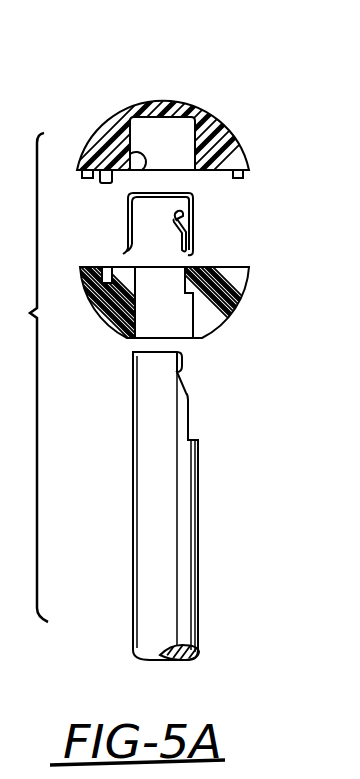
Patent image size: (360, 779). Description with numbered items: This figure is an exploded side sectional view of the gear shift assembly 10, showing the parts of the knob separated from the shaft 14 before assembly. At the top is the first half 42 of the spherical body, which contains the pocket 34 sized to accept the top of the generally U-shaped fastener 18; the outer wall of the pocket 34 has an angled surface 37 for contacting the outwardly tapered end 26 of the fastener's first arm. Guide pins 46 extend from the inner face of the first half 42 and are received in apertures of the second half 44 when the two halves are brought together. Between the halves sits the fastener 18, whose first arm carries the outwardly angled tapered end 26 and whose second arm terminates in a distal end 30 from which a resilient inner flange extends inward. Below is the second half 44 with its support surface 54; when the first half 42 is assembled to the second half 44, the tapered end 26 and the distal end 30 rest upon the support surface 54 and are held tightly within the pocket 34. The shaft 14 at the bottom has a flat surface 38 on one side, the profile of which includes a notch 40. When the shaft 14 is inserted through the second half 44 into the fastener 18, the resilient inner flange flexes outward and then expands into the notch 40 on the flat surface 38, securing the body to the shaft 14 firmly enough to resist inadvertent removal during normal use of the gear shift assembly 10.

The gear shift assembly 10 is at (27, 377).
The shaft 14 is at (188, 543).
The fastener 18 is at (195, 229).
The tapered end 26 is at (124, 252).
The distal end 30 is at (192, 255).
The pocket 34 is at (177, 127).
The angled surface 37 is at (138, 168).
The flat surface 38 is at (188, 418).
The notch 40 is at (180, 373).
The first half 42 is at (232, 123).
The second half 44 is at (243, 282).
The guide pins 46 is at (82, 182).
The support surface 54 is at (122, 264).